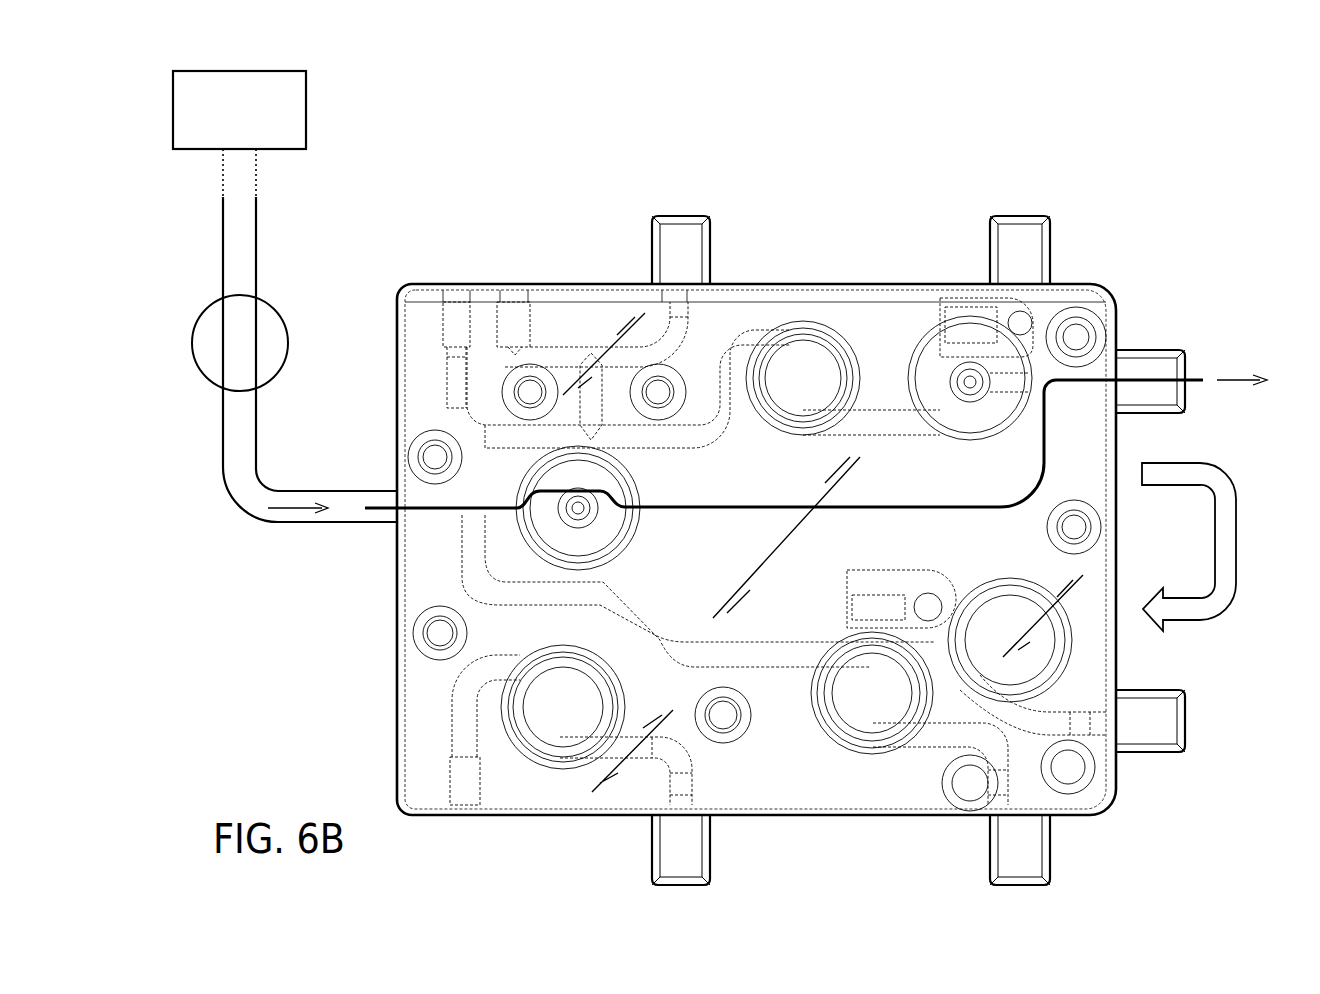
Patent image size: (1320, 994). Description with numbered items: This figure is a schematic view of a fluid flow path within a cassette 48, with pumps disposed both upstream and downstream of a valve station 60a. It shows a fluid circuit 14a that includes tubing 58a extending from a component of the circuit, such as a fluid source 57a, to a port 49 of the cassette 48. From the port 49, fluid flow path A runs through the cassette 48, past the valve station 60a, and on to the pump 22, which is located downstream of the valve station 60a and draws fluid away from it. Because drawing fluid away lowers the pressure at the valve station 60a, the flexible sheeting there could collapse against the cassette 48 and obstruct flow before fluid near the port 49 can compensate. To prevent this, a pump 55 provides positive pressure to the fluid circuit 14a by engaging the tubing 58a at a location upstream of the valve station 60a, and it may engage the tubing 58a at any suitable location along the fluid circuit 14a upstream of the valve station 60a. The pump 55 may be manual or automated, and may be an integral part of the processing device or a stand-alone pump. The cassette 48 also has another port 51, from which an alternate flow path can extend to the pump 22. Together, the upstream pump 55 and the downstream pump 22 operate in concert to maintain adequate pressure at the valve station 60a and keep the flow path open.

The cassette 48 is at (1143, 825).
The port 51 is at (455, 793).
The valve station 60a is at (578, 518).
The port 49 is at (425, 517).
The fluid flow path A is at (500, 503).
The tubing 58a is at (224, 265).
The pump 55 is at (193, 343).
The fluid source 57a is at (173, 108).
The fluid circuit 14a is at (207, 197).
The additive solution pump 22 is at (1227, 478).